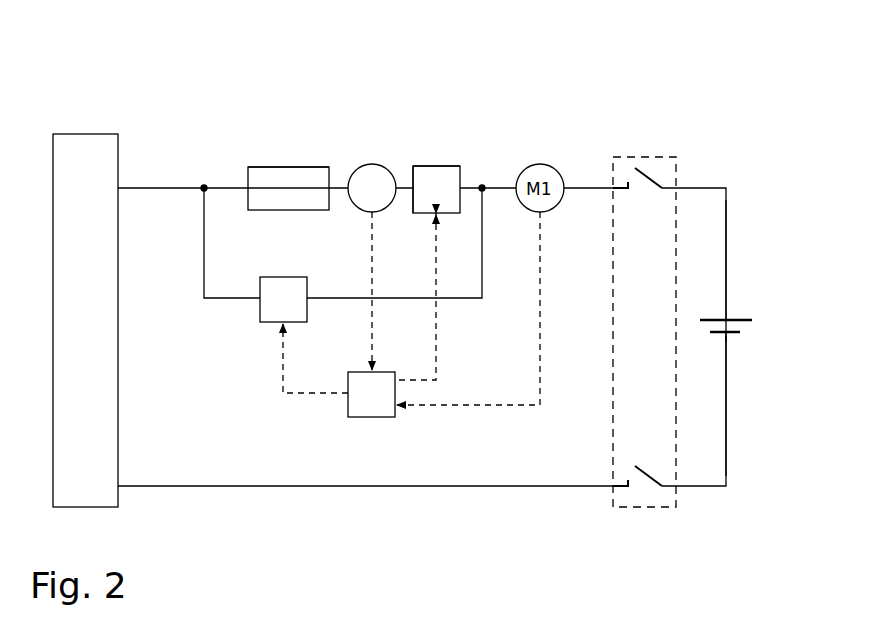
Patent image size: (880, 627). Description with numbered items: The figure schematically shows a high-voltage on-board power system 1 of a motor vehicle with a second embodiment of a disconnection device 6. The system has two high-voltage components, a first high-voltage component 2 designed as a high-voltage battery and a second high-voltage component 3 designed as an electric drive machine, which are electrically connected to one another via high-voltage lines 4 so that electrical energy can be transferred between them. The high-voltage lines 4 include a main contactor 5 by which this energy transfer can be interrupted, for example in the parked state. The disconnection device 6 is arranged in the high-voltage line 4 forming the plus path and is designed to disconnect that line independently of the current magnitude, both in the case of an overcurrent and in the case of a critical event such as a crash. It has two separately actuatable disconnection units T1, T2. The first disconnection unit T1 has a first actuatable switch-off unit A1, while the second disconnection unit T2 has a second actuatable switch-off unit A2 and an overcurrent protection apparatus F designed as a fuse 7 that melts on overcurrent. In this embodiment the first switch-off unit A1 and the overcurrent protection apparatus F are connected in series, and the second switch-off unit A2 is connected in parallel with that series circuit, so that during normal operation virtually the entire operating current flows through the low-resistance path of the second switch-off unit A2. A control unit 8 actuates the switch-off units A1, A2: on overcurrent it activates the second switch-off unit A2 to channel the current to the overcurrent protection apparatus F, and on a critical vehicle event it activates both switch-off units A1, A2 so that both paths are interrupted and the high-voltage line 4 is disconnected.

The high-voltage on-board power system 1 is at (734, 152).
The first high-voltage component 2 is at (742, 320).
The second high-voltage component 3 is at (88, 134).
The high-voltage lines 4 is at (697, 188).
The main contactor 5 is at (640, 157).
The disconnection device 6 is at (430, 110).
The fuse 7 is at (294, 167).
The control unit 8 is at (380, 417).
The overcurrent protection apparatus F is at (262, 156).
The first disconnection unit T1 is at (418, 154).
The second disconnection unit T2 is at (236, 238).
The first switch-off unit A1 is at (450, 166).
The second switch-off unit A2 is at (290, 277).